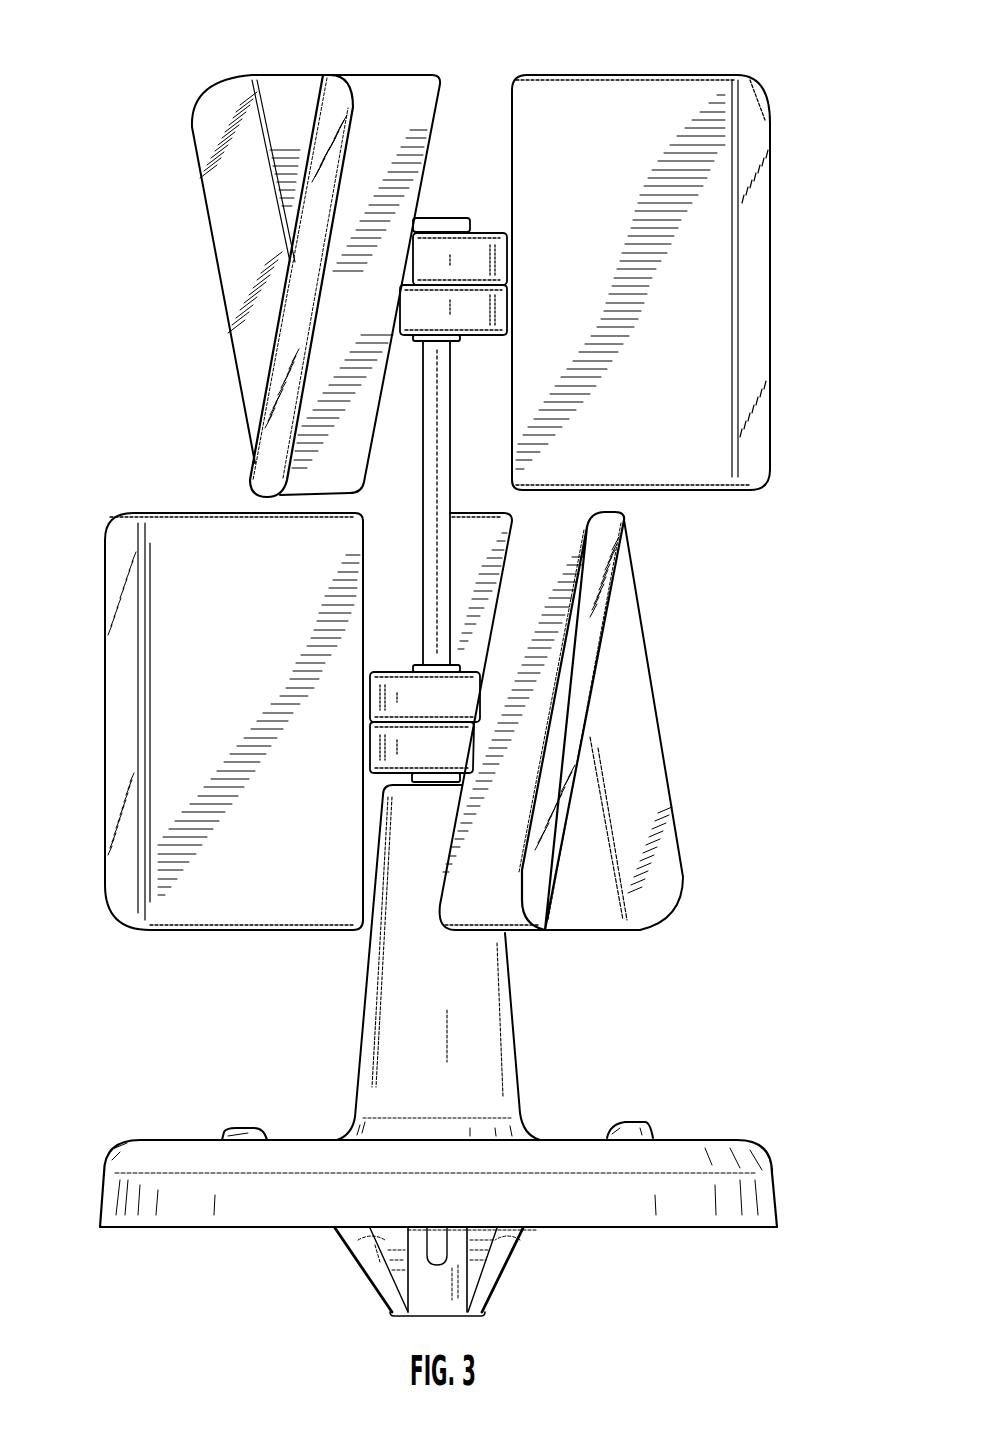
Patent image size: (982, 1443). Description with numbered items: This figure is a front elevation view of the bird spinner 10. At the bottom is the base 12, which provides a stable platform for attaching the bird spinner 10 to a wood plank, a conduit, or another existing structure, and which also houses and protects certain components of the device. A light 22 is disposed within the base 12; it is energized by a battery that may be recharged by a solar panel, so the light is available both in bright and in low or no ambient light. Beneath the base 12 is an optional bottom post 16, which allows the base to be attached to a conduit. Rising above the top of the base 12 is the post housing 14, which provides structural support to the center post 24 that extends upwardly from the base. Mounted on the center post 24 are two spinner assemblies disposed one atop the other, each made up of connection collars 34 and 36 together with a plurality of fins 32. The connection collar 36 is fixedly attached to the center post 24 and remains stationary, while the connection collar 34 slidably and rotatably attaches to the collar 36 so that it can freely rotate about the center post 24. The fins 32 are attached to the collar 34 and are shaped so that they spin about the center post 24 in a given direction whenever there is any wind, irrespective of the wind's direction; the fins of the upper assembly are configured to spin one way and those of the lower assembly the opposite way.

The bird spinner 10 is at (217, 56).
The base 12 is at (763, 1192).
The center post / post housing 14 is at (498, 1037).
The bottom post 16 is at (487, 1278).
The light 22 is at (237, 1128).
The center post 24 is at (450, 502).
The fins 32 is at (210, 115).
The connection collar 34 is at (503, 253).
The connection collar 36 is at (505, 315).